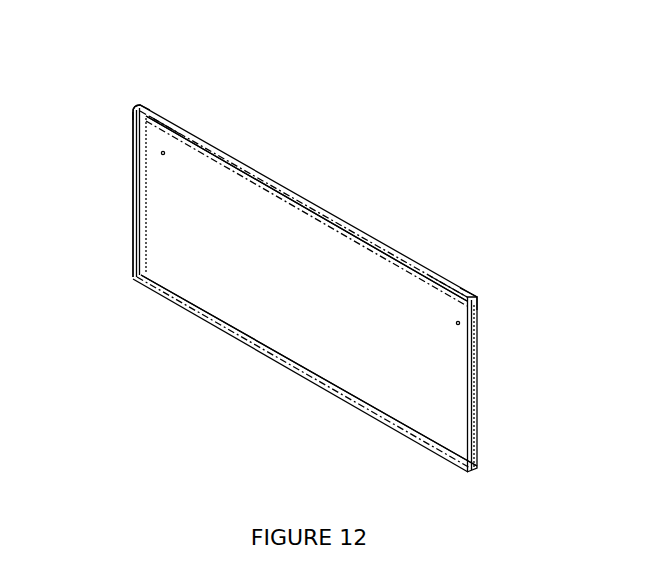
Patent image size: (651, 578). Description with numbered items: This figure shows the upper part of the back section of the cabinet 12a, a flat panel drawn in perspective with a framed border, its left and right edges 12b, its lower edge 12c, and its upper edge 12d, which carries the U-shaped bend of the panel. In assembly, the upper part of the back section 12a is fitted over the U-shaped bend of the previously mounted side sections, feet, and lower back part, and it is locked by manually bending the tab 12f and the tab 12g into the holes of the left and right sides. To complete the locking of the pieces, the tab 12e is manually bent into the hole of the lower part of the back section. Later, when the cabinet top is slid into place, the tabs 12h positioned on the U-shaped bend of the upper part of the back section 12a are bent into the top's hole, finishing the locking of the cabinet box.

The upper part of the back section of the cabinet 12a is at (299, 262).
The side frame member 12b is at (133, 193).
The bottom frame member 12c is at (193, 308).
The top frame member 12d is at (369, 238).
The tab 12e is at (308, 378).
The tab 12f is at (135, 117).
The tab 12g is at (478, 310).
The tabs 12h is at (165, 120).